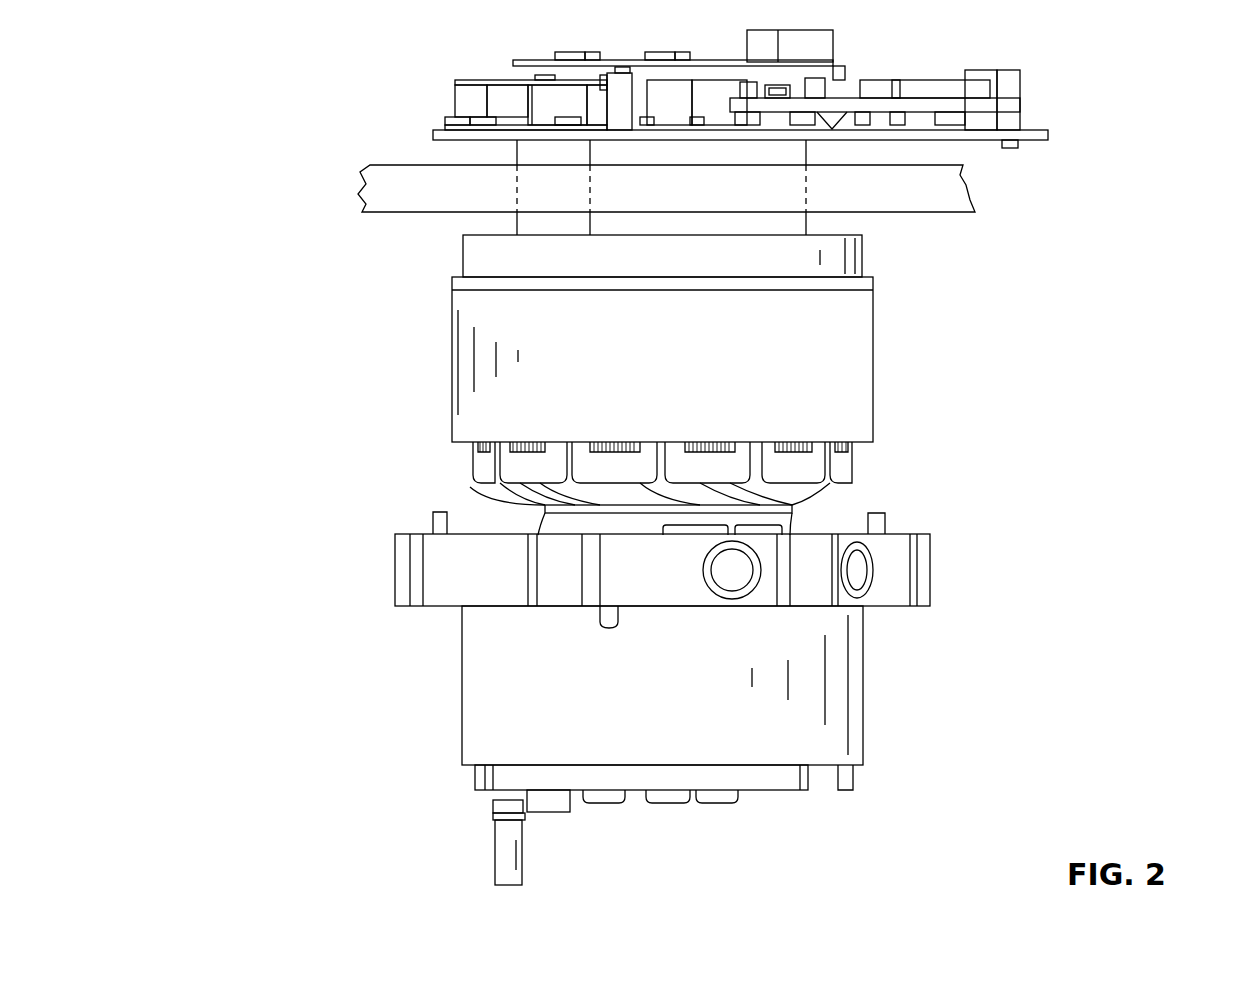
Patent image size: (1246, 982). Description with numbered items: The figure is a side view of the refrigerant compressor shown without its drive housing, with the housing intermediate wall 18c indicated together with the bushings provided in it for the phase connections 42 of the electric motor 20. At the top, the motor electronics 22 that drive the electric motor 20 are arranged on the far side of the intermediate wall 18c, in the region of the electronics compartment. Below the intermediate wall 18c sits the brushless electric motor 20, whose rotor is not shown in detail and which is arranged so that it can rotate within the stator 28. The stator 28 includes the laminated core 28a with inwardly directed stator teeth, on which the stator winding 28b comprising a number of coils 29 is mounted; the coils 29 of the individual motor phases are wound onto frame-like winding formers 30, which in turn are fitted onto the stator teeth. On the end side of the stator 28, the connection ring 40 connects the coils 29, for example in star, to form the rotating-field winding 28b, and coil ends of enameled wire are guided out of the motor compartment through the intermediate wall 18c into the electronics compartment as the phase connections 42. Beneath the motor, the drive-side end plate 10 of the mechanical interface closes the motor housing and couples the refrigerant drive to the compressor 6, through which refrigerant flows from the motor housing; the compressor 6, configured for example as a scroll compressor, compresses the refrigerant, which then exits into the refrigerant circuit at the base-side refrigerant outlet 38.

The compressor 6 is at (493, 702).
The drive-side end plate 10 is at (925, 582).
The housing intermediate wall 18c is at (383, 190).
The electric motor 20 is at (900, 290).
The motor electronics 22 is at (953, 143).
The stator 28 is at (849, 359).
The laminated core 28a is at (840, 360).
The stator winding 28b is at (529, 504).
The coils 29 is at (510, 500).
The winding former 30 is at (838, 468).
The refrigerant outlet 38 is at (505, 848).
The connection ring 40 is at (480, 258).
The phase connections 42 is at (515, 156).